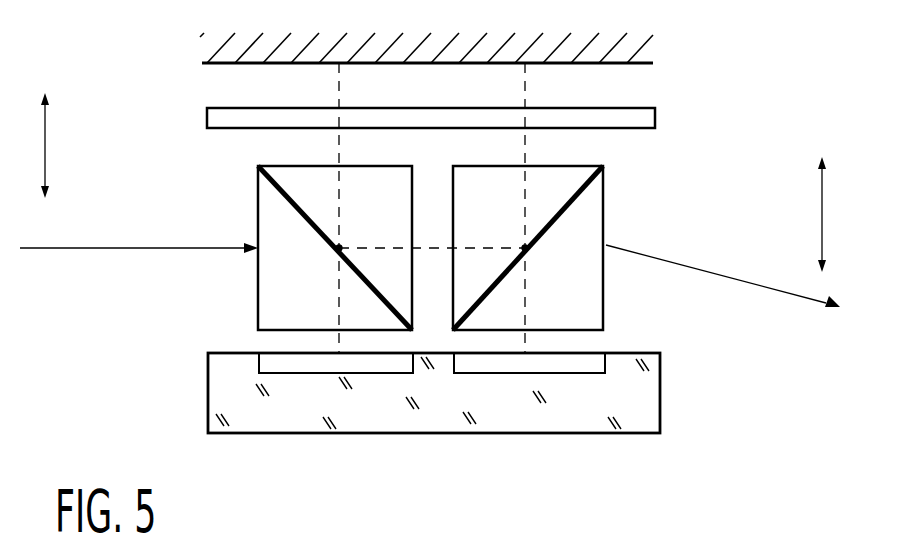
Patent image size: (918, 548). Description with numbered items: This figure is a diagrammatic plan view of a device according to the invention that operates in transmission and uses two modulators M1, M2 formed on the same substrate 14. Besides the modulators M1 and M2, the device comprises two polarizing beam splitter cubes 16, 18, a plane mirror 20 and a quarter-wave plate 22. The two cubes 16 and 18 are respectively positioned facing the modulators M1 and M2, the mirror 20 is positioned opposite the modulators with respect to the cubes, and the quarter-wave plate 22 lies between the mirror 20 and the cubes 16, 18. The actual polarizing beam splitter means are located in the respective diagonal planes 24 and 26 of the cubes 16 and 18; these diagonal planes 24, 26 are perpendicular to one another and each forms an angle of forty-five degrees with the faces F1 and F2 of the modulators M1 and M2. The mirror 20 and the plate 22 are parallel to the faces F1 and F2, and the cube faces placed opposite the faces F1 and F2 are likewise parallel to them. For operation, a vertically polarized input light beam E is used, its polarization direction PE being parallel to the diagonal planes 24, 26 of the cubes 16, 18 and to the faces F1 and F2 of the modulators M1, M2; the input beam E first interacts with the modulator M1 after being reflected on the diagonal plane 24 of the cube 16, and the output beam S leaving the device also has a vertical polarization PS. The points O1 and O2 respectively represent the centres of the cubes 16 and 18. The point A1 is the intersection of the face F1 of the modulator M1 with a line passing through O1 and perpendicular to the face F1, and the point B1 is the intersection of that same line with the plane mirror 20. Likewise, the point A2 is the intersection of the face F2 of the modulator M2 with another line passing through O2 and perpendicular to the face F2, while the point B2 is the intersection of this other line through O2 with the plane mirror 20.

The substrate 14 is at (443, 395).
The polarizing beam splitter cube 16 is at (295, 234).
The polarizing beam splitter cube 18 is at (564, 233).
The plane mirror 20 is at (633, 43).
The quarter-wave plate 22 is at (640, 120).
The diagonal plane 24 is at (286, 180).
The diagonal plane 26 is at (585, 197).
The point B1 is at (339, 66).
The point B2 is at (525, 66).
The centre of cube O1 is at (339, 248).
The centre of cube O2 is at (525, 248).
The point A1 is at (337, 352).
The point A2 is at (528, 352).
The face of modulator F1 is at (275, 351).
The face of modulator F2 is at (598, 345).
The modulator M1 is at (274, 381).
The modulator M2 is at (606, 383).
The input light beam E is at (60, 250).
The output beam S is at (795, 298).
The polarization direction of input beam PE is at (46, 124).
The polarization of output beam PS is at (822, 157).